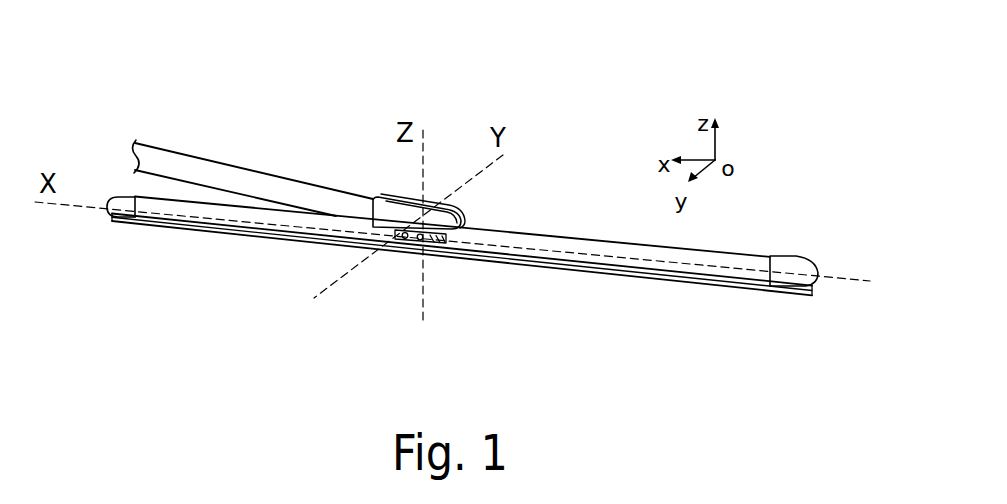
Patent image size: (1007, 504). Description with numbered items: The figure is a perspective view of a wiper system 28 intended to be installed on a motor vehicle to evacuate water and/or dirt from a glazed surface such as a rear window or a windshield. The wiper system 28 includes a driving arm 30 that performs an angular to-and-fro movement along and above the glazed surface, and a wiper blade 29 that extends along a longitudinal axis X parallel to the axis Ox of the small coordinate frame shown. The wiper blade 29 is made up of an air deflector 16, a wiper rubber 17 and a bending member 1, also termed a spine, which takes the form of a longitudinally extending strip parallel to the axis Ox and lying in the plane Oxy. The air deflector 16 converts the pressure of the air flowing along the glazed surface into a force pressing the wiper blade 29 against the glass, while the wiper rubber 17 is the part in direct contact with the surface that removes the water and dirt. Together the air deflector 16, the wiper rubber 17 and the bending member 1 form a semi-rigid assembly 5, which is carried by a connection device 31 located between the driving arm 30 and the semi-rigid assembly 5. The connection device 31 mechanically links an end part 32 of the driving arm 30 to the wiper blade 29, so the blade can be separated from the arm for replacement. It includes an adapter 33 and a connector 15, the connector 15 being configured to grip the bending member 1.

The bending member 1 is at (547, 266).
The semi-rigid assembly 5 is at (639, 299).
The connector 15 is at (420, 243).
The air deflector 16 is at (163, 199).
The wiper rubber 17 is at (270, 239).
The wiper system 28 is at (359, 128).
The wiper blade 29 is at (581, 222).
The driving arm 30 is at (152, 142).
The connection device 31 is at (444, 279).
The end part 32 is at (372, 218).
The adapter 33 is at (448, 221).